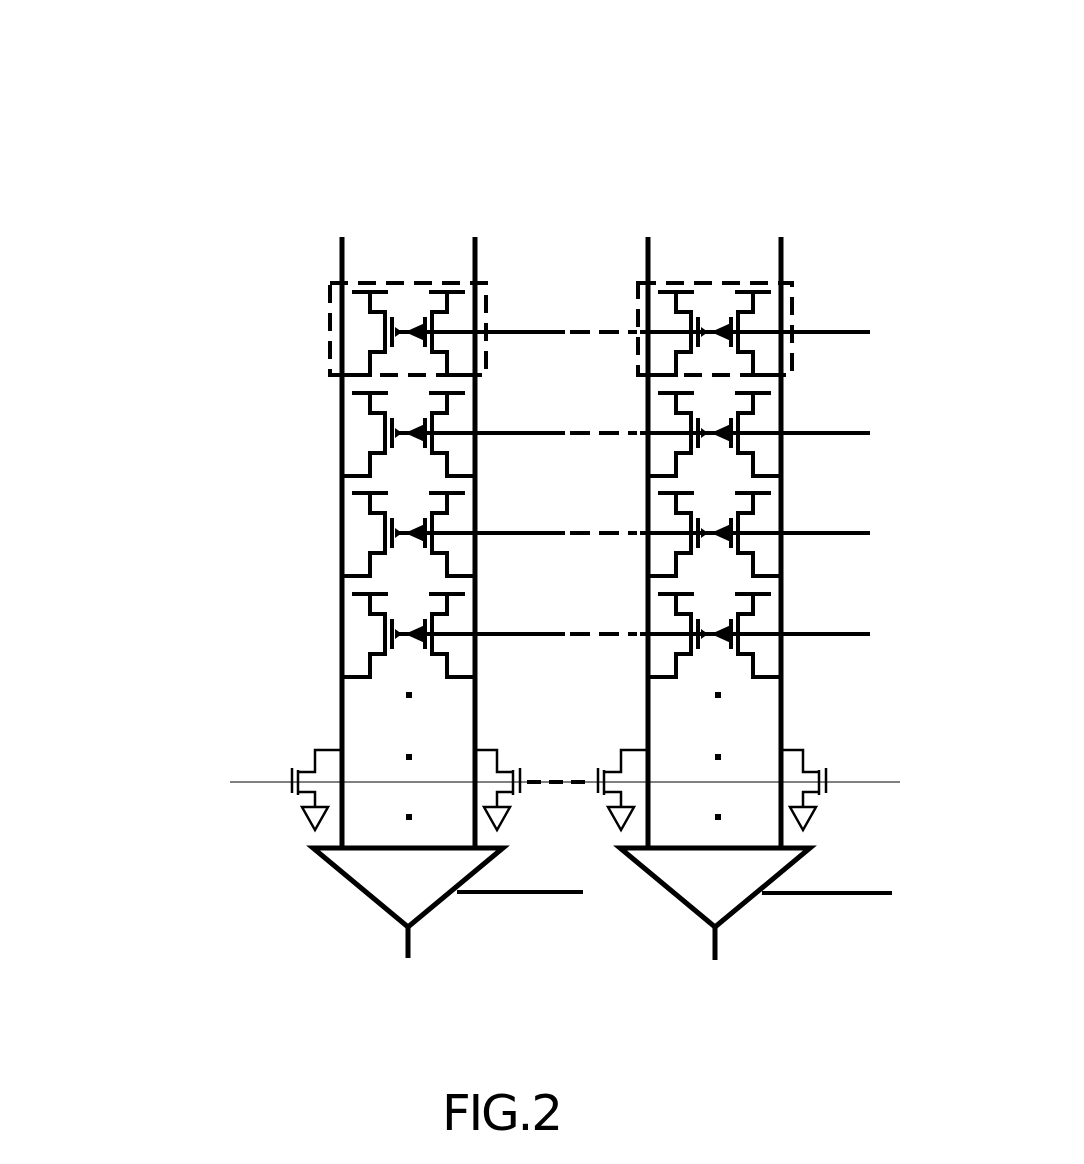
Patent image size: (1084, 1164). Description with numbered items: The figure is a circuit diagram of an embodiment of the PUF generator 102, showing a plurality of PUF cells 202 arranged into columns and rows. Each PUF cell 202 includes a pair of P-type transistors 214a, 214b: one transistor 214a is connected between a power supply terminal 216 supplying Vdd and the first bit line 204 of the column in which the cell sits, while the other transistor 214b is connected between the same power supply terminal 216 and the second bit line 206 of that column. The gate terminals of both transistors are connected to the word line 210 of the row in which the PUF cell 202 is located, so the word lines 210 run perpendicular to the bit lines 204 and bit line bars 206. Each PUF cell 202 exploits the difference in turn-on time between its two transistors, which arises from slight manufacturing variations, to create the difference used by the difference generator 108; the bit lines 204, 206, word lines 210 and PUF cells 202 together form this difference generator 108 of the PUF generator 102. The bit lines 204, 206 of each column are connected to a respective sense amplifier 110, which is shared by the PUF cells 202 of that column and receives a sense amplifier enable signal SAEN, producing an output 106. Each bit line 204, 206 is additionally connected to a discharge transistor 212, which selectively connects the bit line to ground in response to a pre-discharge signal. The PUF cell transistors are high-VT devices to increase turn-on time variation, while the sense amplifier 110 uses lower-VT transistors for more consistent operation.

The PUF generator 102 is at (228, 75).
The output 106 is at (408, 948).
The difference generator 108 is at (140, 840).
The sense amplifier 110 is at (355, 888).
The PUF cell 202 is at (316, 334).
The first bit line 204 is at (342, 237).
The second bit line 206 is at (475, 237).
The word line 210 is at (832, 336).
The discharge transistor 212 is at (296, 797).
The transistor 214a is at (385, 328).
The transistor 214b is at (432, 326).
The power supply terminal 216 is at (447, 290).